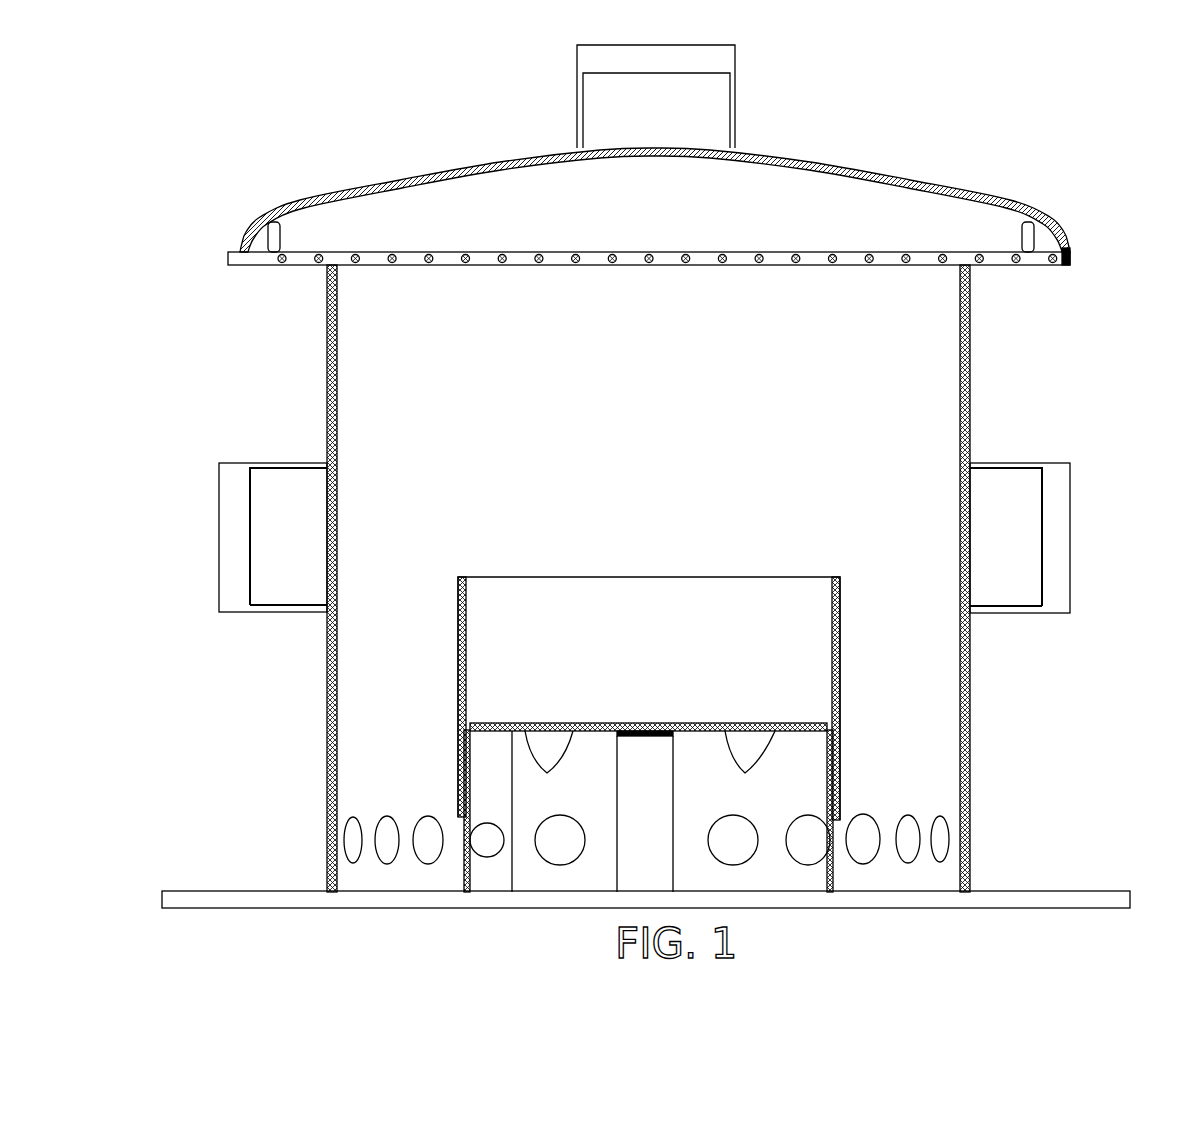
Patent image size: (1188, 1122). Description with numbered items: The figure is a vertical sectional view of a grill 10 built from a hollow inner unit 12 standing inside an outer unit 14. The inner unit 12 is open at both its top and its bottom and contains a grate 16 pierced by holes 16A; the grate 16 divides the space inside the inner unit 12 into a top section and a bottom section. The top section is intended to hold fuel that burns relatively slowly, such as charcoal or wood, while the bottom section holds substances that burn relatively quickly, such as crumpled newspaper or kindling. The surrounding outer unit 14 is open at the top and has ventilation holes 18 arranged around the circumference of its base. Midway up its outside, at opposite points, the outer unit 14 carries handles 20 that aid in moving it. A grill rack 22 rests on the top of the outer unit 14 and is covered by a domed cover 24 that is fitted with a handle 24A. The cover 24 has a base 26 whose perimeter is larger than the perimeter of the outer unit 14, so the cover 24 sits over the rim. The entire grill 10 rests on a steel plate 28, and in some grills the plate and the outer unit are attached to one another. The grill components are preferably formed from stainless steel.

The grill 10 is at (148, 157).
The hollow inner unit 12 is at (788, 585).
The outer unit 14 is at (946, 372).
The grate 16 is at (680, 723).
The holes 16A is at (650, 798).
The ventilation holes 18 is at (1005, 843).
The handles 20 is at (280, 463).
The grill rack 22 is at (635, 262).
The domed cover 24 is at (965, 177).
The handle 24A is at (737, 92).
The base 26 is at (1070, 270).
The steel plate 28 is at (1080, 898).